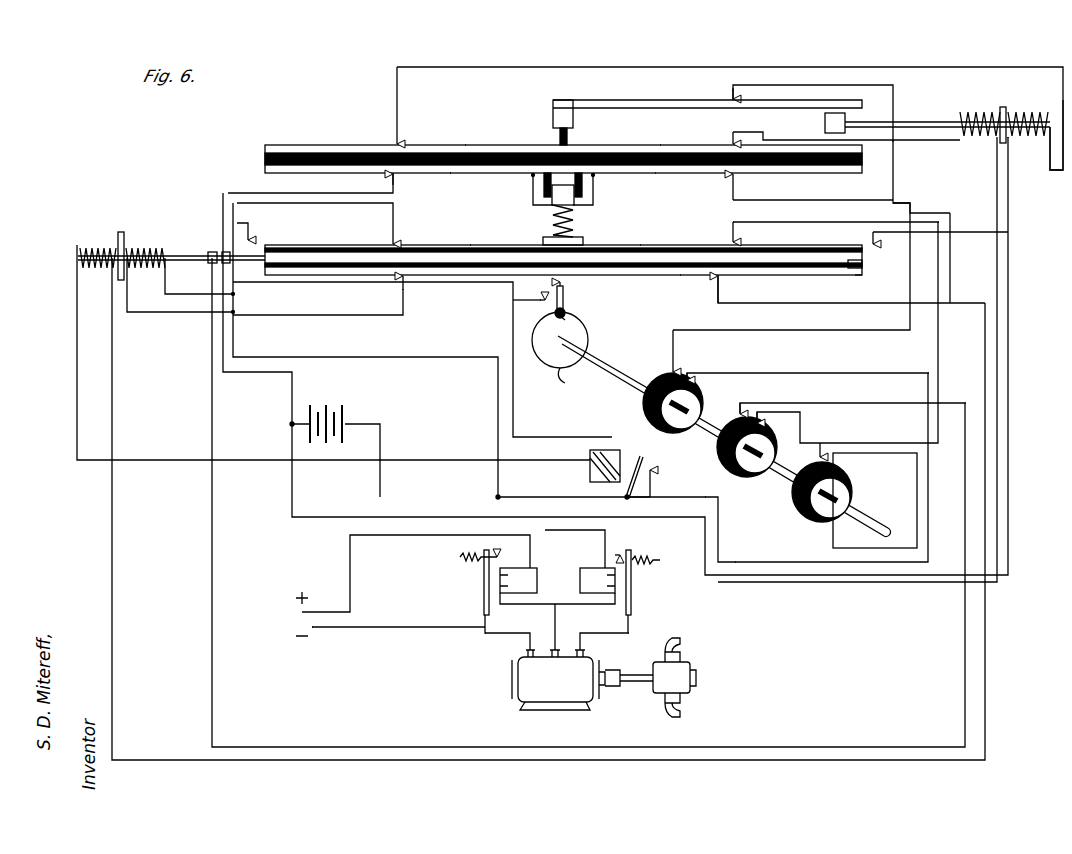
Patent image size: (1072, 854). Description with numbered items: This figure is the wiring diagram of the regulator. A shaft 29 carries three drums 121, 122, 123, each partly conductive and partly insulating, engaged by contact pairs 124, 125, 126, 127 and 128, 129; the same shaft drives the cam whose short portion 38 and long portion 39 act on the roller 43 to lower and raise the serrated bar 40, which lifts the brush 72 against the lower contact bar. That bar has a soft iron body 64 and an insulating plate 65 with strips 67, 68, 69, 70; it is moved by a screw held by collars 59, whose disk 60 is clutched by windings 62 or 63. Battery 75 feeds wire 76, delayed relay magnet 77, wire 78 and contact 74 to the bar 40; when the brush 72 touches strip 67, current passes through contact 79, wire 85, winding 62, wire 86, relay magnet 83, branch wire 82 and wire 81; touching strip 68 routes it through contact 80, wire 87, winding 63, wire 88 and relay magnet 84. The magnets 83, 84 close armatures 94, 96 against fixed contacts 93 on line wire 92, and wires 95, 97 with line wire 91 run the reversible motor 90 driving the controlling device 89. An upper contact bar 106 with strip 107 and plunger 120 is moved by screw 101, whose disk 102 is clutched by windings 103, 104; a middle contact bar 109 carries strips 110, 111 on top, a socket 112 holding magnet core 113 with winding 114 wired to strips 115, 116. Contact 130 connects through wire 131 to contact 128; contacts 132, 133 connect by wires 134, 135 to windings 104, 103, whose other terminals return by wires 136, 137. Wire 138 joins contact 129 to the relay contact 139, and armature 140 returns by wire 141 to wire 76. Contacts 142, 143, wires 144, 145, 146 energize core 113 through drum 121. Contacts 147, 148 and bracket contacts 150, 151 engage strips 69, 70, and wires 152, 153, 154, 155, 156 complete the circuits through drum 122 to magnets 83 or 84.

The shaft 29 is at (610, 366).
The short arcuate portion 38 is at (545, 326).
The long arcuate portion 39 is at (574, 378).
The bar 40 is at (570, 312).
The cam roller 43 is at (572, 318).
The collars 59 is at (210, 252).
The disk 60 is at (121, 232).
The magnet winding 62 is at (150, 248).
The magnet winding 63 is at (88, 248).
The lower contact bar body 64 is at (862, 276).
The insulating plate 65 is at (862, 264).
The conductor strip 67 is at (462, 276).
The conductor strip 68 is at (682, 276).
The conductor strip 69 is at (472, 245).
The conductor strip 70 is at (642, 245).
The contact brush 72 is at (565, 291).
The contact 74 is at (546, 300).
The battery 75 is at (340, 415).
The wire 76 is at (383, 445).
The delayed relay magnet 77 is at (590, 460).
The wire 78 is at (514, 430).
The spring pressed contact 79 is at (400, 288).
The spring pressed contact 80 is at (725, 288).
The wire 81 is at (290, 426).
The branch wires 82 is at (560, 606).
The relay magnet 83 is at (500, 582).
The relay magnet 84 is at (615, 584).
The wire 85 is at (348, 315).
The wire 86 is at (236, 296).
The wire 87 is at (112, 350).
The wire 88 is at (77, 346).
The controlling device 89 is at (690, 668).
The motor 90 is at (518, 680).
The line wire 91 is at (400, 628).
The line wire 92 is at (350, 573).
The fixed contacts 93 is at (470, 556).
The armature 94 is at (484, 605).
The wire 95 is at (500, 638).
The armature 96 is at (631, 606).
The wire 97 is at (618, 636).
The screw 101 is at (944, 122).
The disk 102 is at (1003, 108).
The winding 103 is at (978, 138).
The winding 104 is at (1040, 140).
The upper contact bar 106 is at (825, 125).
The conductor strip 107 is at (690, 100).
The middle contact bar 109 is at (265, 160).
The conductor strip 110 is at (468, 145).
The conductor strip 111 is at (664, 145).
The socket 112 is at (544, 186).
The magnet core 113 is at (575, 195).
The winding 114 is at (575, 221).
The contact strip 115 is at (452, 173).
The contact strip 116 is at (657, 173).
The spring pressed contact 120 is at (553, 134).
The drum 121 is at (643, 409).
The drum 122 is at (722, 449).
The drum 123 is at (800, 505).
The contact 124 is at (676, 360).
The contact 125 is at (694, 382).
The contact 126 is at (750, 405).
The contact 127 is at (762, 423).
The contact 128 is at (822, 446).
The contact 129 is at (846, 470).
The spring pressed contact 130 is at (741, 99).
The wire 131 is at (835, 85).
The spring contact 132 is at (390, 140).
The spring contact 133 is at (733, 138).
The wire 134 is at (545, 67).
The wire 135 is at (905, 148).
The wire 136 is at (1010, 220).
The wire 137 is at (995, 185).
The wire 138 is at (692, 480).
The contact 139 is at (645, 460).
The armature 140 is at (640, 472).
The wire 141 is at (635, 494).
The spring pressed contact 142 is at (388, 178).
The spring pressed contact 143 is at (728, 190).
The wire 144 is at (818, 200).
The wire 145 is at (786, 366).
The wire 146 is at (336, 203).
The contact 147 is at (388, 242).
The contact 148 is at (740, 240).
The spring pressed contact 150 is at (256, 240).
The spring pressed contact 151 is at (870, 241).
The wire 152 is at (394, 214).
The wire 153 is at (920, 404).
The wire 154 is at (733, 229).
The wire 155 is at (270, 282).
The wire 156 is at (940, 233).